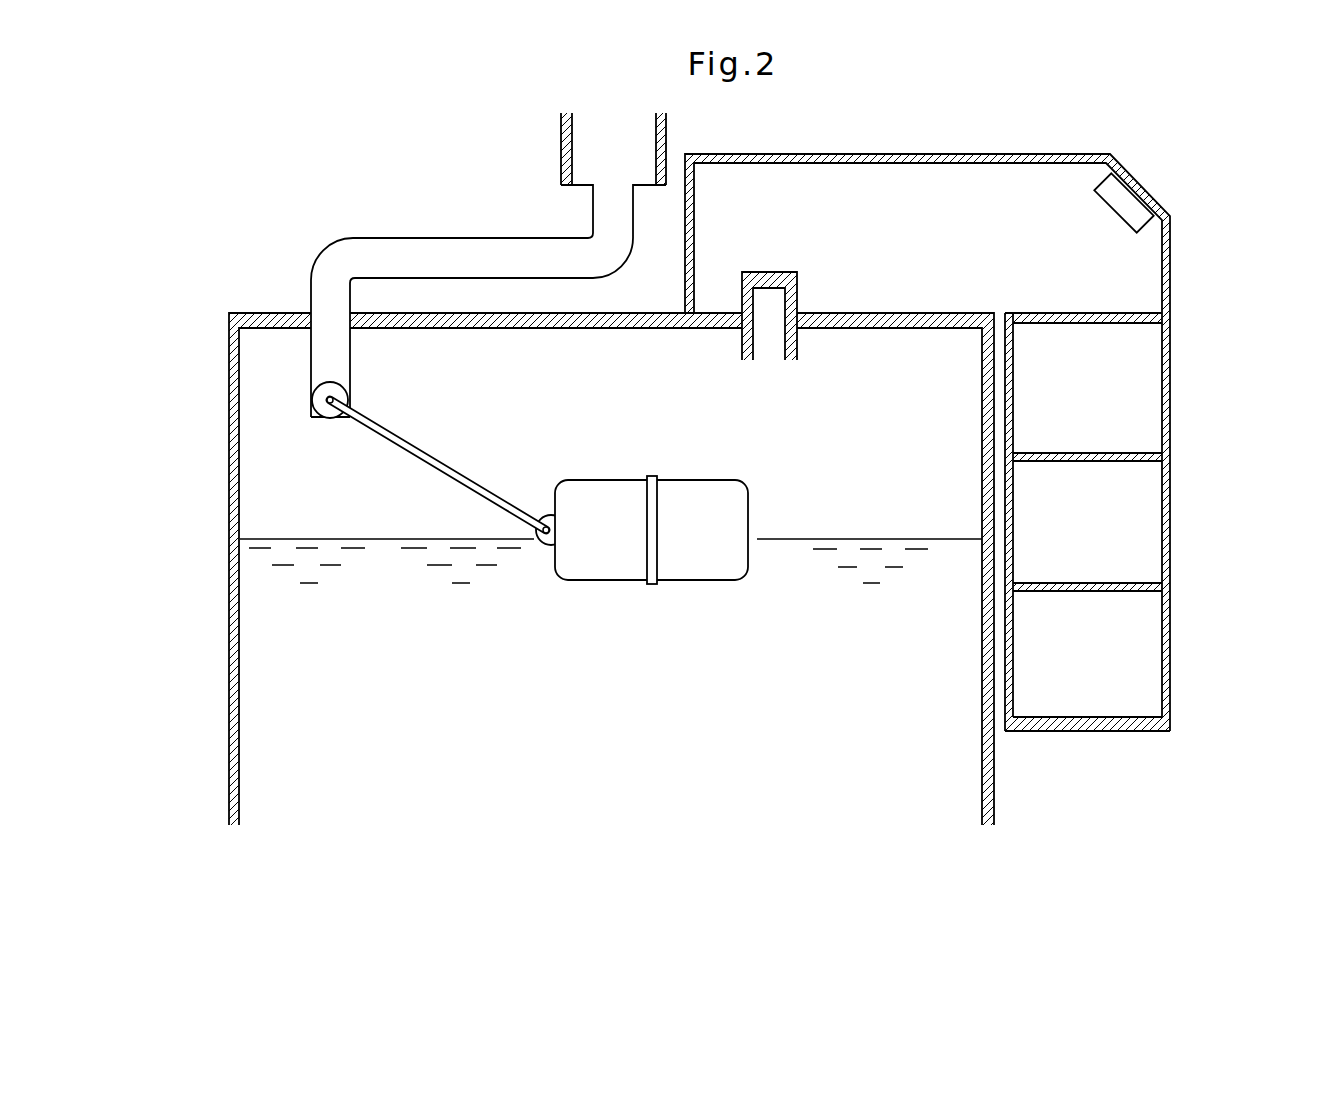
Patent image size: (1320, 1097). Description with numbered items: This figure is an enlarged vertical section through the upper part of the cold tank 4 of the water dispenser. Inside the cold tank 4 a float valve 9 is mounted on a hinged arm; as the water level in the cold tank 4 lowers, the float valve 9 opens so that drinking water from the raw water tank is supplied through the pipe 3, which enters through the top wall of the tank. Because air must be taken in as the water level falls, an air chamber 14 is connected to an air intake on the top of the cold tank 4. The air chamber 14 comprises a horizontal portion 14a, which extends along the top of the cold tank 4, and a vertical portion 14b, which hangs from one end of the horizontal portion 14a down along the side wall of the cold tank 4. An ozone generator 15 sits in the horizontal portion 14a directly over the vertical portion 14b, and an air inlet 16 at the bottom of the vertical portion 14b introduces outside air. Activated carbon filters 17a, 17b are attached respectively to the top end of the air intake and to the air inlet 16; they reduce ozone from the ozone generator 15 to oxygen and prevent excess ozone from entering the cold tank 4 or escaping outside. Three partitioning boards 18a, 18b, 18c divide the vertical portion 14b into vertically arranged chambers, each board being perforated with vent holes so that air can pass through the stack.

The pipe 3 is at (460, 248).
The cold tank 4 is at (227, 505).
The float valve 9 is at (713, 490).
The air chamber 14 is at (985, 463).
The horizontal portion 14a is at (931, 415).
The vertical portion 14b is at (1145, 570).
The ozone generator 15 is at (1130, 198).
The air inlet 16 is at (1058, 733).
The activated carbon filter 17a is at (766, 273).
The activated carbon filter 17b is at (1123, 772).
The partitioning board 18a is at (1094, 321).
The partitioning board 18b is at (1094, 459).
The partitioning board 18c is at (1106, 591).